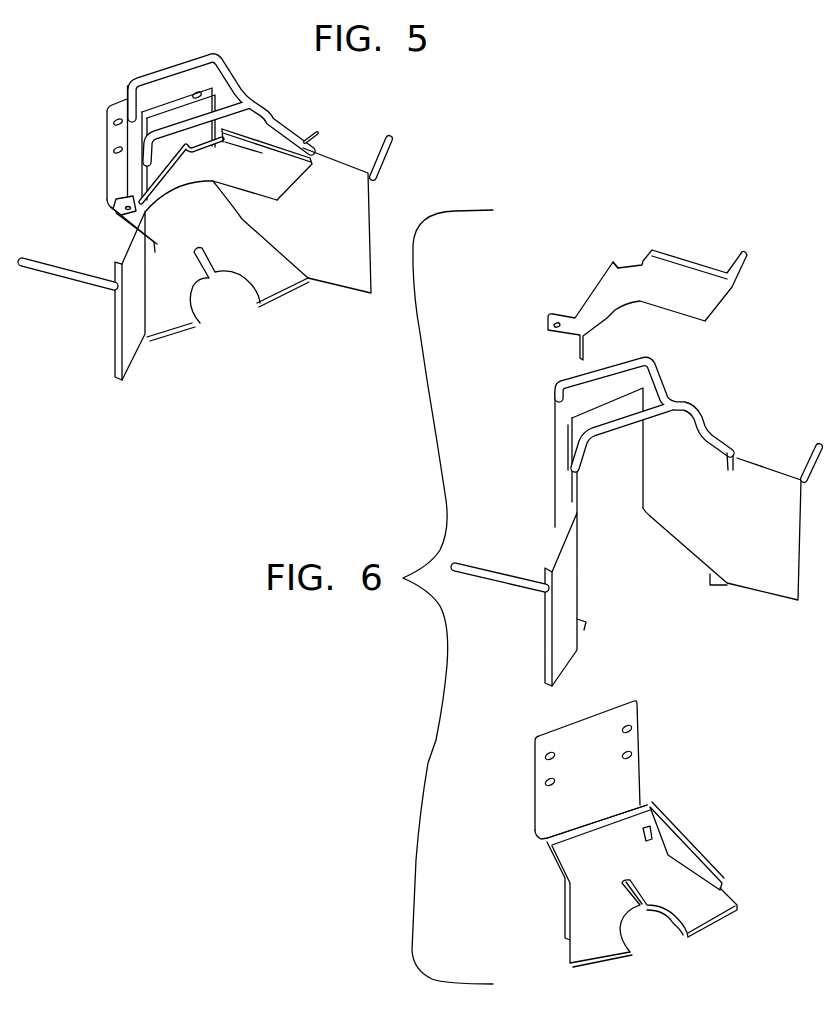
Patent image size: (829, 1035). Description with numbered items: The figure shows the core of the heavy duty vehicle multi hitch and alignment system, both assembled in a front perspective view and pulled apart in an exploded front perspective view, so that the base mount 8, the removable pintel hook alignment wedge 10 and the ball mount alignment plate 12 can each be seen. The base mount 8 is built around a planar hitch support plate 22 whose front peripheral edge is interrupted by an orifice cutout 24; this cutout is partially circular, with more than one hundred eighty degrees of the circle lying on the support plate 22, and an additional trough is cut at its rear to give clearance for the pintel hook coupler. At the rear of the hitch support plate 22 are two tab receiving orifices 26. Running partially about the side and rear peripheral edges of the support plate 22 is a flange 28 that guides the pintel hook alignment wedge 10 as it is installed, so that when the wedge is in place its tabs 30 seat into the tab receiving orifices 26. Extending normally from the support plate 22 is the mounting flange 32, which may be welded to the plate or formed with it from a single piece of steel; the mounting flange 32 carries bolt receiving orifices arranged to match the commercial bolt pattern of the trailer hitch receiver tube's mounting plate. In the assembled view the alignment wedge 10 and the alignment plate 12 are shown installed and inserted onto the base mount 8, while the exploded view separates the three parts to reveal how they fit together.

The base mount 8 is at (628, 844).
The pintel hook alignment wedge 10 is at (637, 523).
The ball mount alignment plate 12 is at (683, 287).
The hitch support plate 22 is at (703, 912).
The orifice cutout 24 is at (653, 921).
The tab receiving orifices 26 is at (647, 828).
The flange 28 is at (705, 856).
The tabs 30 is at (643, 512).
The mounting flange 32 is at (547, 812).